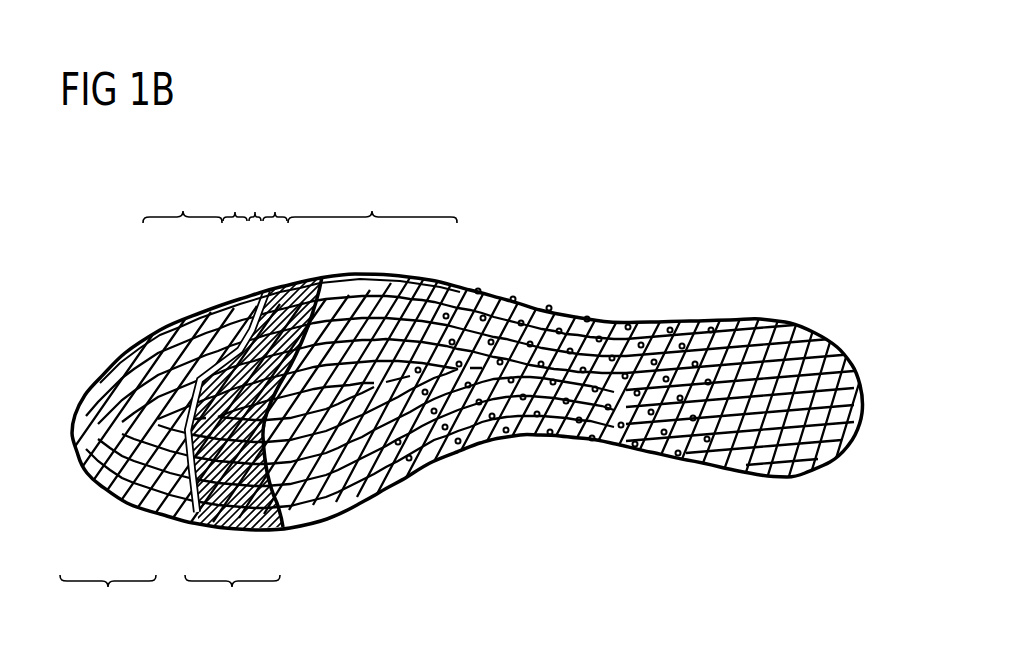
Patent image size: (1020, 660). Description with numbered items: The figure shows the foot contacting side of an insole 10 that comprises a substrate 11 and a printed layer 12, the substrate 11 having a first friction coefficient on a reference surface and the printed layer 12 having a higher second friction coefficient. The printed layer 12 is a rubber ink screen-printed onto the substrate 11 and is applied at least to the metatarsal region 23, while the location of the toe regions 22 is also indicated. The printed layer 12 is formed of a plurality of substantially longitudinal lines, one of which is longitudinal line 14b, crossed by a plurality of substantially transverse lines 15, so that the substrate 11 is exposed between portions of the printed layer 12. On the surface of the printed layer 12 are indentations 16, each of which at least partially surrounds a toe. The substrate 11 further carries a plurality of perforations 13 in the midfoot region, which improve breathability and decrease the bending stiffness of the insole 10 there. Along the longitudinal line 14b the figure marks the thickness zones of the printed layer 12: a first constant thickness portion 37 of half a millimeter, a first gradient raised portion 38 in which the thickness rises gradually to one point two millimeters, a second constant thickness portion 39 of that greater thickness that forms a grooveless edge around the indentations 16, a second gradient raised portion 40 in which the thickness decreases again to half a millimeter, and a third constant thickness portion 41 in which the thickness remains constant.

The insole 10 is at (114, 268).
The substrate 11 is at (130, 372).
The printed layer 12 is at (217, 468).
The perforations 13 is at (552, 370).
The longitudinal line 14b is at (433, 282).
The transverse lines 15 is at (338, 502).
The indentation 16 is at (267, 290).
The toe regions 22 is at (108, 600).
The metatarsal region 23 is at (232, 600).
The first constant thickness portion 37 is at (182, 201).
The first gradient raised portion 38 is at (235, 211).
The second constant thickness portion 39 is at (255, 211).
The second gradient raised portion 40 is at (275, 211).
The third constant thickness portion 41 is at (372, 201).